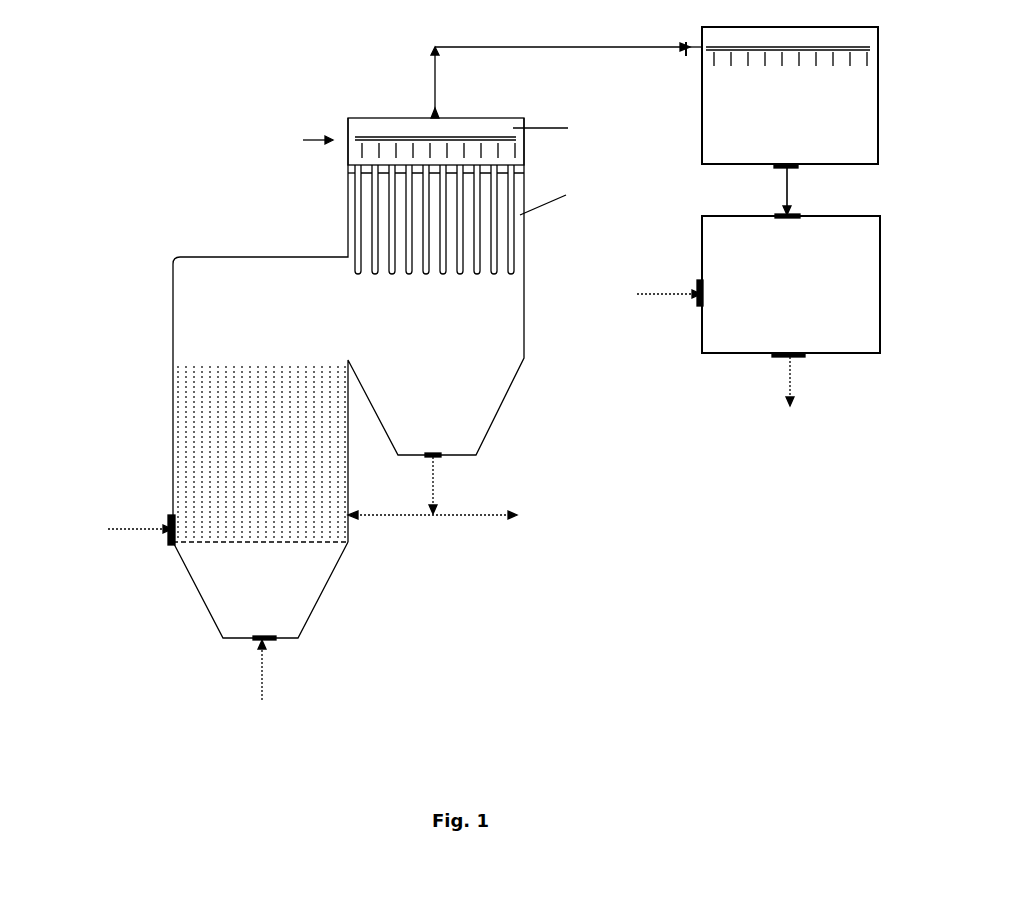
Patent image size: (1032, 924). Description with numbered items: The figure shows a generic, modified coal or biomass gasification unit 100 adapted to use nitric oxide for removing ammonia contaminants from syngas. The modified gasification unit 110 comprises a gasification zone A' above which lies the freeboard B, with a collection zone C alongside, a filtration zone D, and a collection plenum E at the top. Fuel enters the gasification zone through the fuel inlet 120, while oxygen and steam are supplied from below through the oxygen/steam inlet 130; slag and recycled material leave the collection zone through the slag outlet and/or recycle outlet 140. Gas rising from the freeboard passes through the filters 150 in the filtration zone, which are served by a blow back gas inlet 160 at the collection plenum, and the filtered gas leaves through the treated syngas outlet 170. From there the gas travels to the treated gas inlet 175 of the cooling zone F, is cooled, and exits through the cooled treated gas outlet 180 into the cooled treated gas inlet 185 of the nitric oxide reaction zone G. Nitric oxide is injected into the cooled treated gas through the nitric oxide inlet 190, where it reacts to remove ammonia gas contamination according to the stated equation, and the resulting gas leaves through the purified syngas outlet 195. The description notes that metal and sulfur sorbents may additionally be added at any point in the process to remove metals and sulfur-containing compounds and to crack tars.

The gasification unit 100 is at (165, 183).
The modified gasification unit 110 is at (526, 290).
The fuel inlet 120 is at (118, 530).
The oxygen/steam inlet 130 is at (272, 641).
The slag outlet and/or recycle outlet 140 is at (438, 458).
The filters 150 is at (357, 223).
The blow back gas inlet 160 is at (333, 140).
The treated syngas outlet 170 is at (443, 113).
The treated gas inlet 175 is at (683, 53).
The cooled treated gas outlet 180 is at (797, 170).
The cooled treated gas inlet 185 is at (782, 212).
The nitric oxide inlet 190 is at (700, 290).
The purified syngas outlet 195 is at (812, 358).